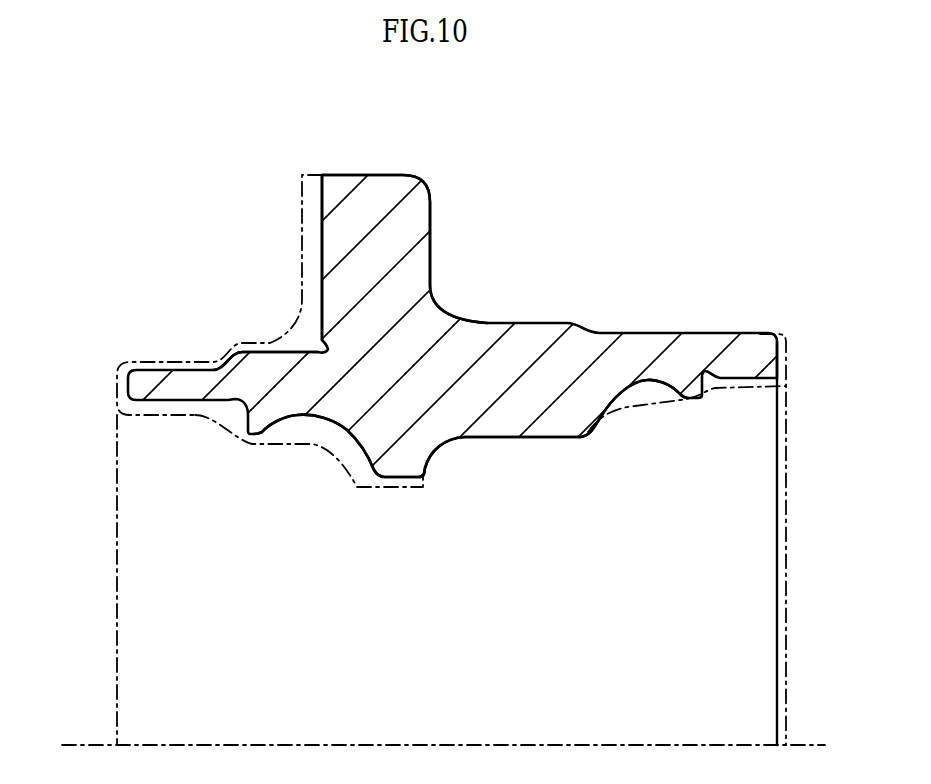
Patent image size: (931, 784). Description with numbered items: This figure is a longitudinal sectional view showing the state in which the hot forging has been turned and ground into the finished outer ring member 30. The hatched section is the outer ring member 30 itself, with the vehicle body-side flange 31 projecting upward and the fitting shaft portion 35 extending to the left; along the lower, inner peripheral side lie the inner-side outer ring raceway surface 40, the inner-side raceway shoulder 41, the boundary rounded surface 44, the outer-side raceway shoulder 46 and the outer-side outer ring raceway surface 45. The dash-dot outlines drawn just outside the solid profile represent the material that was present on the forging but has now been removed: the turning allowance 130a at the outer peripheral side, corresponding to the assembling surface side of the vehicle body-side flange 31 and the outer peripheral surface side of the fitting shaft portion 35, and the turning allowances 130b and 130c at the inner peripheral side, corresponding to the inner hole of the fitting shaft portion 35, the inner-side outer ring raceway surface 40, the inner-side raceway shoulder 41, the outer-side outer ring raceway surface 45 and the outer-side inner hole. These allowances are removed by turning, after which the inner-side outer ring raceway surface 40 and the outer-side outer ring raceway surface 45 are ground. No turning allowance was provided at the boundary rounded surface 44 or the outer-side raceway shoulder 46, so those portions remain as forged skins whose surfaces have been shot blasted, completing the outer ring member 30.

The outer ring member 30 is at (546, 314).
The vehicle body-side flange 31 is at (413, 222).
The fitting shaft portion 35 is at (270, 344).
The inner-side outer ring raceway surface 40 is at (322, 417).
The inner-side raceway shoulder 41 is at (393, 463).
The boundary rounded surface 44 is at (443, 452).
The outer-side outer ring raceway surface 45 is at (610, 397).
The outer-side raceway shoulder 46 is at (548, 427).
The turning allowance 130a is at (297, 317).
The turning allowance 130b is at (320, 447).
The turning allowance 130c is at (652, 398).